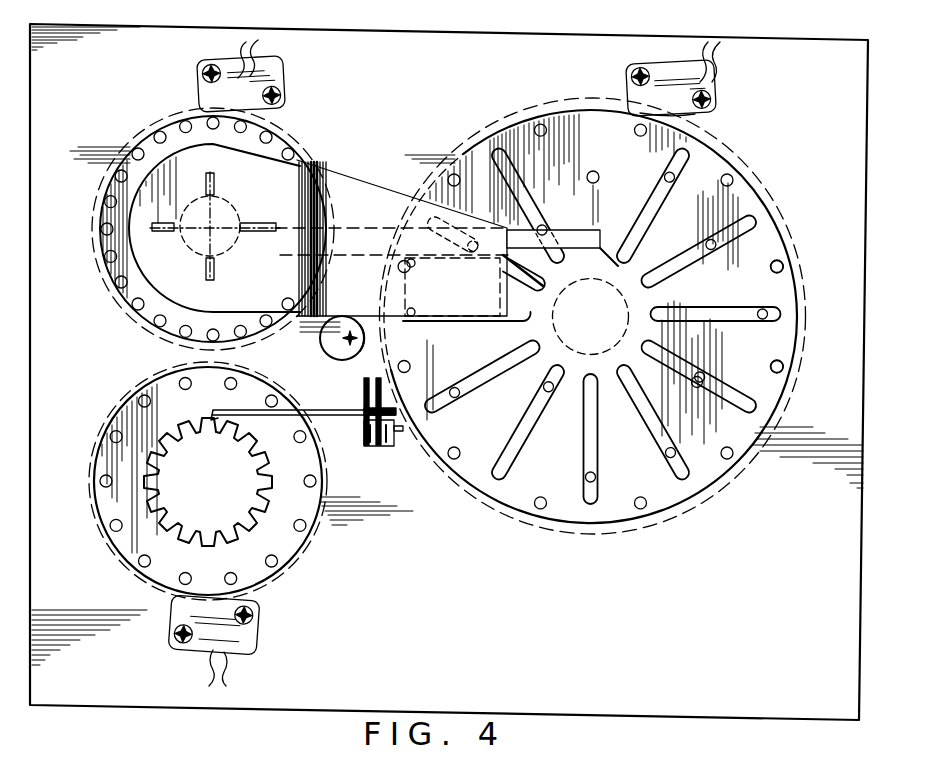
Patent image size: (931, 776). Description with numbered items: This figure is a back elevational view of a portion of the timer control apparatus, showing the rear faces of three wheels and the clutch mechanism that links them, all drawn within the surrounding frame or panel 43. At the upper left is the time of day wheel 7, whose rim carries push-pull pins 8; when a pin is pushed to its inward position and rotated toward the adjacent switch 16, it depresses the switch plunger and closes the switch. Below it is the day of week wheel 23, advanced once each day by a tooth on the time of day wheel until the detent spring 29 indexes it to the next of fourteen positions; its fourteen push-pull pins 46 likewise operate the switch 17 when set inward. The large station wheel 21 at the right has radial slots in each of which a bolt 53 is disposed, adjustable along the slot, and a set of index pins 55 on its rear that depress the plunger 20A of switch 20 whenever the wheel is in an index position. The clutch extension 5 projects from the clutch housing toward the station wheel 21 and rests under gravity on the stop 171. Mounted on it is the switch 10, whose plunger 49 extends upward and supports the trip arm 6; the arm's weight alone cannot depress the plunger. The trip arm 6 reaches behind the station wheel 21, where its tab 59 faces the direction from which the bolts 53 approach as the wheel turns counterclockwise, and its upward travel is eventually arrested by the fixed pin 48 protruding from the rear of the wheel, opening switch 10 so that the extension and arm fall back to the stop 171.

The clutch extension 5 is at (402, 192).
The trip arm 6 is at (570, 230).
The time of day wheel 7 is at (107, 282).
The push-pull pins 8 is at (160, 328).
The switch 10 is at (428, 300).
The switch 16 is at (198, 84).
The switch 17 is at (260, 628).
The switch 20 is at (628, 76).
The plunger 20A is at (695, 114).
The station wheel 21 is at (756, 196).
The day of week wheel 23 is at (300, 550).
The detent spring 29 is at (345, 421).
The panel 43 is at (711, 719).
The push-pull pins 46 is at (80, 450).
The fixed pin 48 is at (600, 178).
The plunger 49 is at (505, 287).
The bolt 53 is at (703, 383).
The pins 55 is at (784, 364).
The tab 59 is at (602, 240).
The stop 171 is at (330, 358).